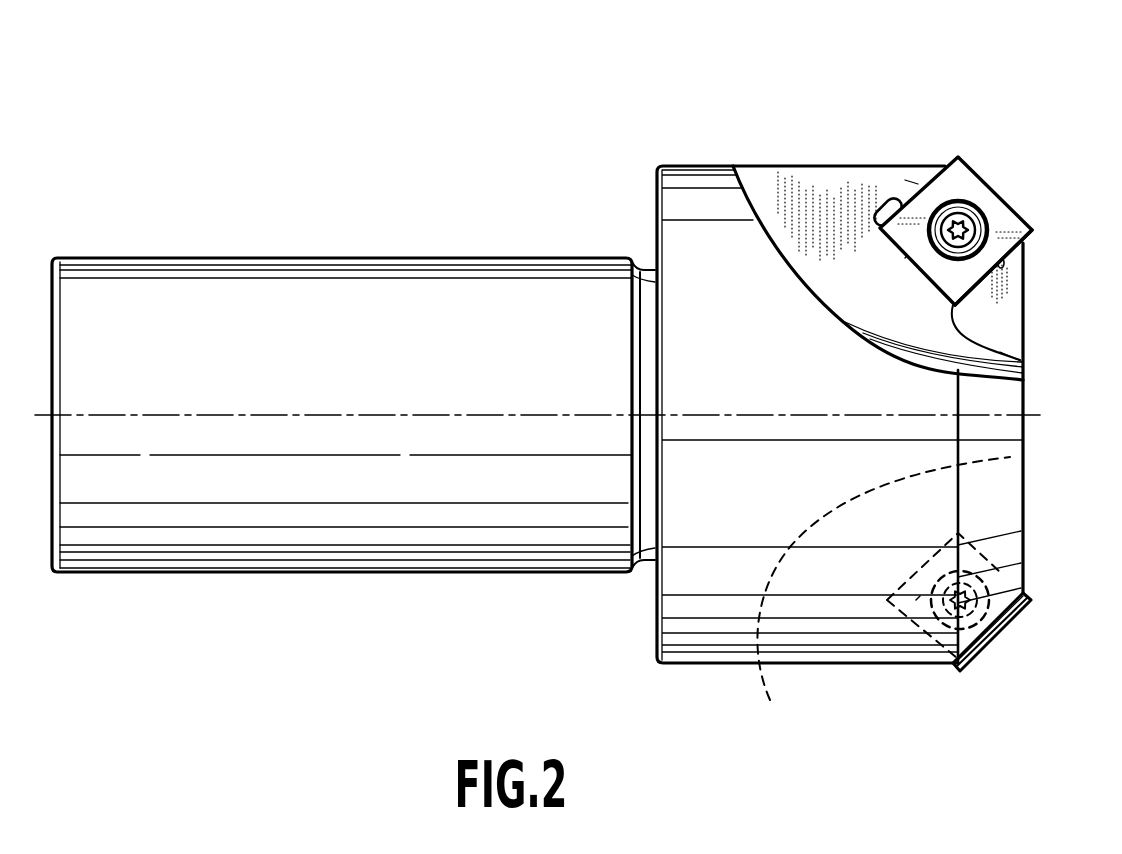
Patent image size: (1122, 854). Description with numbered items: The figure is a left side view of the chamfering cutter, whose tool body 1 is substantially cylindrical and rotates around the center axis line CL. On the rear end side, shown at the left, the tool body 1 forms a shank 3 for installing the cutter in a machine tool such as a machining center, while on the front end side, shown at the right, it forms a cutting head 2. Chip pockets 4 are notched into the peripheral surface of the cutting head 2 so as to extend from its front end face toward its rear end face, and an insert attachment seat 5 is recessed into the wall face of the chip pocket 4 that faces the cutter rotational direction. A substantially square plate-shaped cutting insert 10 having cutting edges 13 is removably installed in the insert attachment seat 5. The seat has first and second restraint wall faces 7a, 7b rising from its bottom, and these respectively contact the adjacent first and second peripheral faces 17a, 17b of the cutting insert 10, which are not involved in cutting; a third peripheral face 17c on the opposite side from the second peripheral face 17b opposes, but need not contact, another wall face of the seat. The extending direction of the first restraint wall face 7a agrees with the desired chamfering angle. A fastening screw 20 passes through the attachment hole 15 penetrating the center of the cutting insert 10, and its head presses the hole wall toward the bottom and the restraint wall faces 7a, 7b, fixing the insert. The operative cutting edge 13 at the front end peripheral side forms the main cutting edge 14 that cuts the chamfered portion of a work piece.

The tool body 1 is at (464, 151).
The cutting head 2 is at (824, 146).
The shank 3 is at (263, 241).
The chip pocket 4 is at (800, 205).
The insert attachment seat 5 is at (913, 236).
The first restraint wall face 7a is at (908, 262).
The second restraint wall face 7b is at (1003, 266).
The cutting insert 10 is at (983, 152).
The cutting edge 13 is at (922, 185).
The main cutting edge 14 is at (1012, 212).
The attachment hole 15 is at (940, 252).
The first peripheral face 17a is at (1020, 360).
The second peripheral face 17b is at (1020, 256).
The third peripheral face 17c is at (918, 183).
The fastening screw 20 is at (964, 224).
The center axis line CL is at (322, 414).